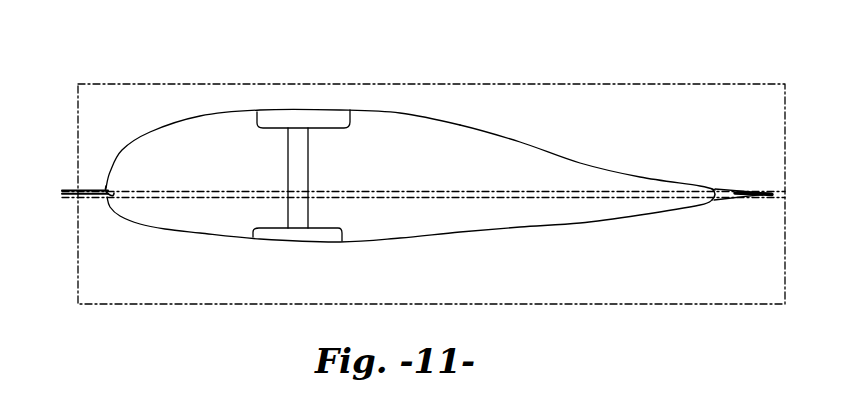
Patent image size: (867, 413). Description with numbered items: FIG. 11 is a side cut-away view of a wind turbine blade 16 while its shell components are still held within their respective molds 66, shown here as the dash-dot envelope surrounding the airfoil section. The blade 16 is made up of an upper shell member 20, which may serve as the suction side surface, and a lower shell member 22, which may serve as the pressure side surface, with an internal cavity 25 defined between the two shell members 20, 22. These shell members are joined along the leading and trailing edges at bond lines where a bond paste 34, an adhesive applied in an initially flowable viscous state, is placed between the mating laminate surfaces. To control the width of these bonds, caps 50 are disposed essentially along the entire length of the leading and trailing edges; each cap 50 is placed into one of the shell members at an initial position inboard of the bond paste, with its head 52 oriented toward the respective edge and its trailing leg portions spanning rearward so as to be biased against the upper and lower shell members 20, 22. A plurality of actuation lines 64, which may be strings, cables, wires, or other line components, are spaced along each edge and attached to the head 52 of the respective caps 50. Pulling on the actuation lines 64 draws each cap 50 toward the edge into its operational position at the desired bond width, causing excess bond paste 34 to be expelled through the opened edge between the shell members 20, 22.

The wind turbine blade 16 is at (394, 72).
The upper shell member 20 is at (443, 124).
The lower shell member 22 is at (187, 230).
The internal cavity 25 is at (528, 162).
The bond paste 34 is at (722, 189).
The bond cap 50 is at (110, 189).
The head 52 is at (750, 199).
The actuation lines 64 is at (90, 200).
The molds 66 is at (656, 83).